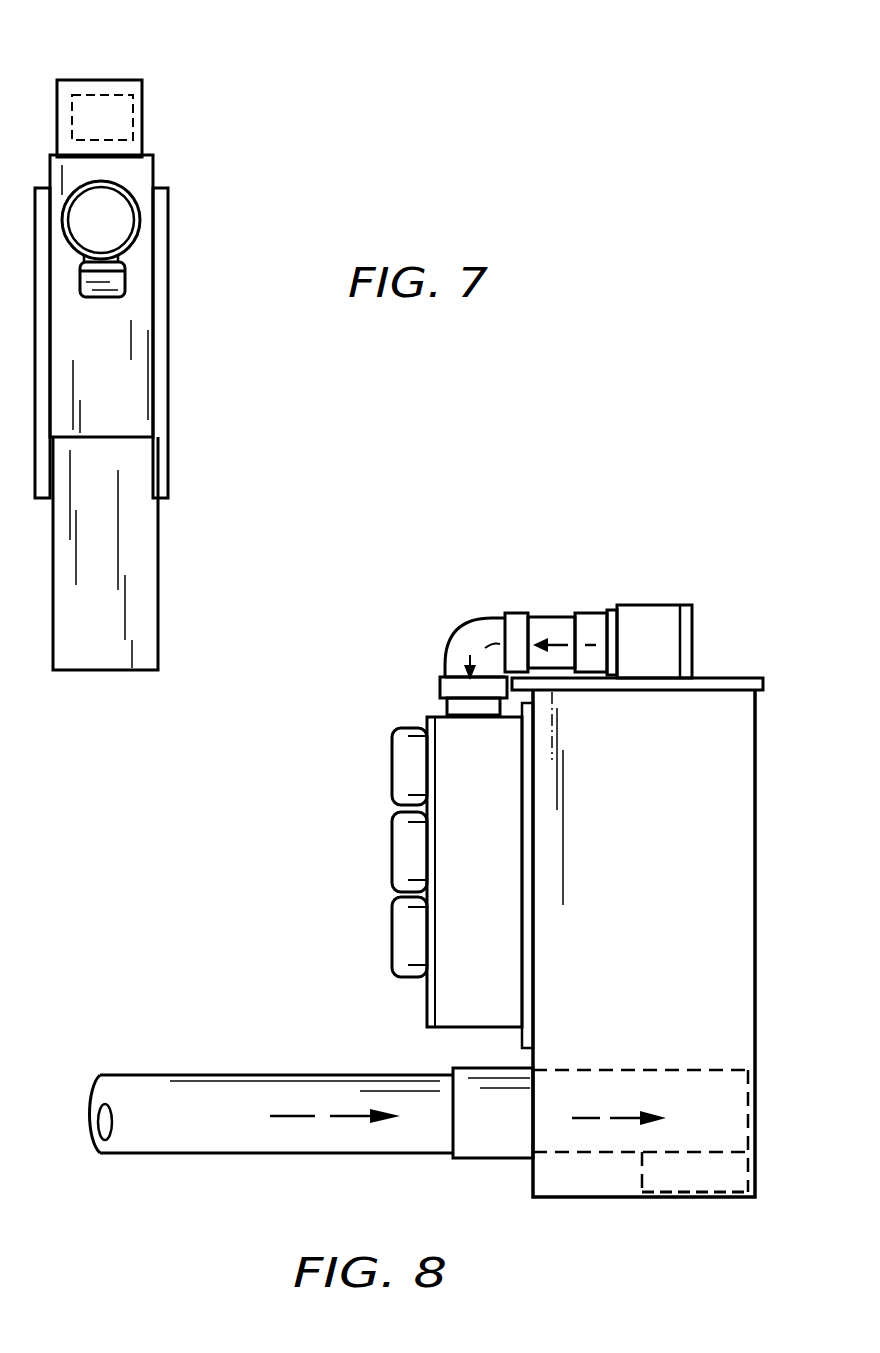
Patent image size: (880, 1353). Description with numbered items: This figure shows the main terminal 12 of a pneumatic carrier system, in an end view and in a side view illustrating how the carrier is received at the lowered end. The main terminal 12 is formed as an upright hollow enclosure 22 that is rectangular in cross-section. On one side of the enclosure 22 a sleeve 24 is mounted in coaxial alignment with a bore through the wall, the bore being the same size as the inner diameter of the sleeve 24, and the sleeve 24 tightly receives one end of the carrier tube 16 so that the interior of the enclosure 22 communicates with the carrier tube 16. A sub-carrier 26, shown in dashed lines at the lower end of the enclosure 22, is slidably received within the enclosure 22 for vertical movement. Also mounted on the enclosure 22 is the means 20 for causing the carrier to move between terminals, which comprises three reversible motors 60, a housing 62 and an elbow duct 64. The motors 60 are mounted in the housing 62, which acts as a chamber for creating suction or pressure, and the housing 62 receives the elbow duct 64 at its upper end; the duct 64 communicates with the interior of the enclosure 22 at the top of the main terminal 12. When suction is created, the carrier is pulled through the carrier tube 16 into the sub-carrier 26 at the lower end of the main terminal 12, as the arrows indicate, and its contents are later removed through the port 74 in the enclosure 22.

In FIG. 7, the main terminal 12 is at (175, 108).
In FIG. 8, the main terminal 12 is at (748, 638).
In FIG. 8, the carrier tube 16 is at (200, 1073).
In FIG. 8, the means for causing carrier to move between terminals 20 is at (407, 705).
In FIG. 7, the enclosure 22 is at (160, 578).
In FIG. 8, the enclosure 22 is at (757, 950).
In FIG. 8, the sleeve 24 is at (510, 1134).
In FIG. 8, the sub-carrier 26 is at (705, 1070).
In FIG. 8, the motors 60 is at (392, 782).
In FIG. 8, the housing 62 is at (500, 1004).
In FIG. 8, the elbow duct 64 is at (468, 617).
In FIG. 7, the port 74 is at (116, 215).